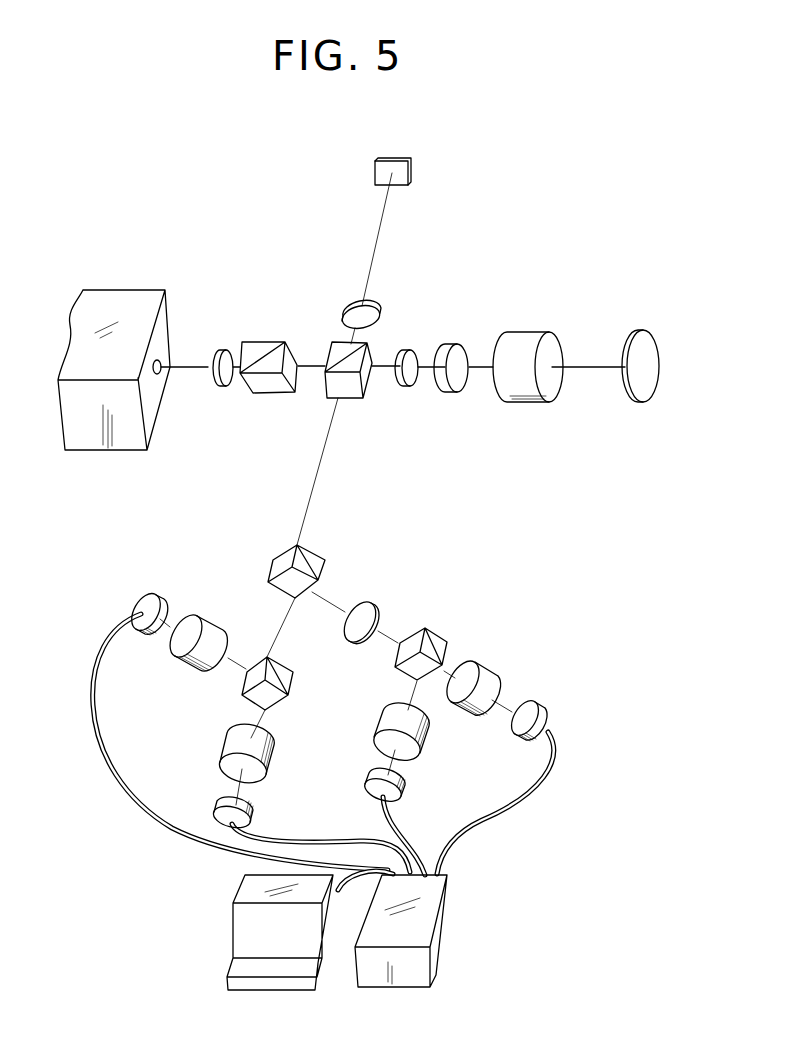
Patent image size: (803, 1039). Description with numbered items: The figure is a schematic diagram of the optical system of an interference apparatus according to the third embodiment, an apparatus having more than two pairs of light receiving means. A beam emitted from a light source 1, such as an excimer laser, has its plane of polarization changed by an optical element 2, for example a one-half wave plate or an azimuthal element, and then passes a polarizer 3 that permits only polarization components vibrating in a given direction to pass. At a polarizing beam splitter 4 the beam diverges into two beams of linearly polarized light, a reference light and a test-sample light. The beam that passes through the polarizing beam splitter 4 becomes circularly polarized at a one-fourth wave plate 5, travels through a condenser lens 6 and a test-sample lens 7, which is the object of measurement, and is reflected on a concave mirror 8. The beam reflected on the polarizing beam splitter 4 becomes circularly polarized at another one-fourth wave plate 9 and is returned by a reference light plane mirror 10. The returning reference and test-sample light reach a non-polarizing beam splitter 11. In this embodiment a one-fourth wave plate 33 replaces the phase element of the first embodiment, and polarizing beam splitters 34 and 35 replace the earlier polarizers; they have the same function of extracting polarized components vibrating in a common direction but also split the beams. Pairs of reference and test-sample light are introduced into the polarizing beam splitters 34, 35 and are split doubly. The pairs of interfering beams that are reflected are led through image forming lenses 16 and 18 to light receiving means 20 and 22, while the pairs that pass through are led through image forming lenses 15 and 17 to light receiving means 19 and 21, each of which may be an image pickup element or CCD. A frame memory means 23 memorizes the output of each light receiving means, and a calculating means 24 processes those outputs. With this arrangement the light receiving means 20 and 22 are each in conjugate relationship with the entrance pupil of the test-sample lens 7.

The light source 1 is at (108, 452).
The optical element 2 is at (210, 386).
The polarizer 3 is at (251, 396).
The polarizing beam splitter 4 is at (353, 398).
The one-fourth wave plate 5 is at (404, 390).
The condenser lens 6 is at (444, 346).
The test-sample lens 7 is at (521, 337).
The concave mirror 8 is at (630, 401).
The one-fourth wave plate 9 is at (372, 306).
The reference light plane mirror 10 is at (413, 170).
The non-polarizing beam splitter 11 is at (323, 556).
The image forming lens 15 is at (272, 758).
The image forming lens 16 is at (212, 613).
The image forming lens 17 is at (493, 666).
The image forming lens 18 is at (425, 736).
The light receiving means 19 is at (255, 812).
The light receiving means 20 is at (160, 594).
The light receiving means 21 is at (549, 712).
The light receiving means 22 is at (404, 791).
The frame memory means 23 is at (443, 945).
The calculating means 24 is at (232, 924).
The one-fourth wave plate 33 is at (378, 603).
The polarizing beam splitter 34 is at (293, 680).
The polarizing beam splitter 35 is at (450, 636).